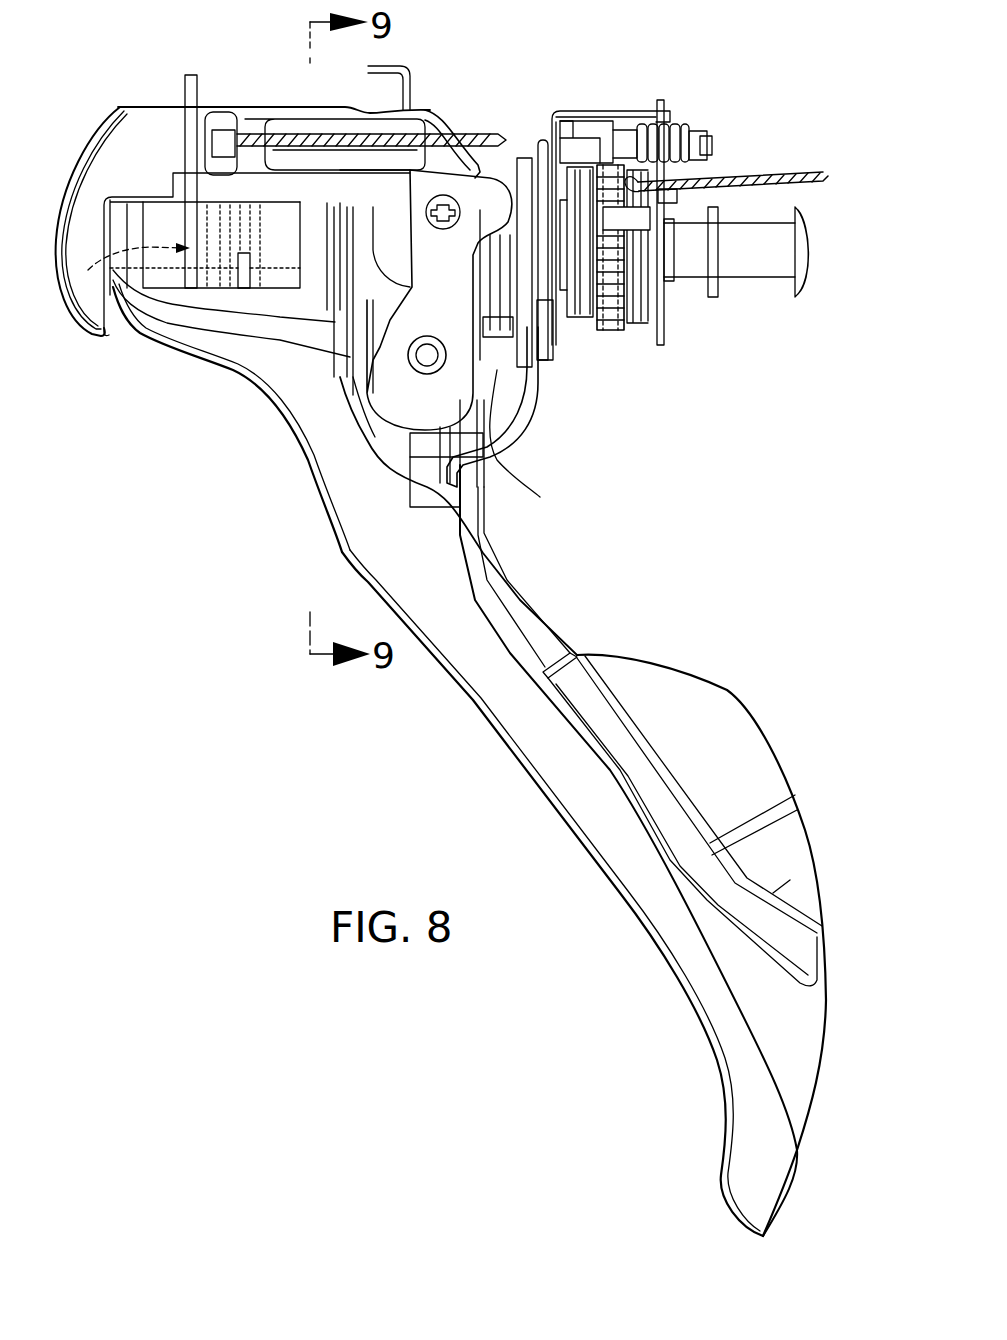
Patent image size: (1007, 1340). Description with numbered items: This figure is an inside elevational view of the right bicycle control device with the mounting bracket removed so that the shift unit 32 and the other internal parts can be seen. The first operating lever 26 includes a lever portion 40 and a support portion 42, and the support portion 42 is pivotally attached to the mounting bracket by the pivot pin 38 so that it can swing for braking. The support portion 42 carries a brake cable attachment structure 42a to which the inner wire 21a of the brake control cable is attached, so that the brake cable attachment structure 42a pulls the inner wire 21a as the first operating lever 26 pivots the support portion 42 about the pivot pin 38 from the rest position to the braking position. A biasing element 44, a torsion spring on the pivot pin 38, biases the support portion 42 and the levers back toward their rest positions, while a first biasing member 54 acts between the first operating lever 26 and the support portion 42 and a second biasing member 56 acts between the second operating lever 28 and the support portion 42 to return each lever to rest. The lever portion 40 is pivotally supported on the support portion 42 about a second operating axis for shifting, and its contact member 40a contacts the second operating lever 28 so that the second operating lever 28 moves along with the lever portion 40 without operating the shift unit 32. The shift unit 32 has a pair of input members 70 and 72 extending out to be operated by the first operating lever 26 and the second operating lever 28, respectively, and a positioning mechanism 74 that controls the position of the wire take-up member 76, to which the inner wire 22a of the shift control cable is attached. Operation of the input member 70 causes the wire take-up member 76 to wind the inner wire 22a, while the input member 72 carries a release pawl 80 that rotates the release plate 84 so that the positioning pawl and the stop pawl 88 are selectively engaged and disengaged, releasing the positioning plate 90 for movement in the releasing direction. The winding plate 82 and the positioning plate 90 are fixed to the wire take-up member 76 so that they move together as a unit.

The inner wire 21a is at (427, 113).
The inner wire 22a is at (747, 175).
The first operating lever 26 is at (478, 716).
The second operating lever 28 is at (732, 685).
The shift unit 32 is at (672, 345).
The pivot pin 38 is at (410, 362).
The lever portion 40 is at (536, 778).
The contact member 40a is at (340, 548).
The support portion 42 is at (97, 135).
The brake cable attachment structure 42a is at (253, 140).
The biasing element 44 is at (487, 427).
The first biasing member 54 is at (152, 118).
The second biasing member 56 is at (348, 250).
The input member 70 is at (497, 380).
The input member 72 is at (490, 430).
The positioning mechanism 74 is at (645, 88).
The wire take-up member 76 is at (635, 290).
The release pawl 80 is at (557, 330).
The winding plate 82 is at (580, 320).
The release plate 84 is at (540, 140).
The stop pawl 88 is at (590, 147).
The positioning plate 90 is at (608, 305).